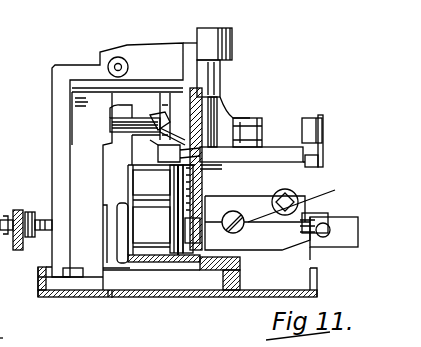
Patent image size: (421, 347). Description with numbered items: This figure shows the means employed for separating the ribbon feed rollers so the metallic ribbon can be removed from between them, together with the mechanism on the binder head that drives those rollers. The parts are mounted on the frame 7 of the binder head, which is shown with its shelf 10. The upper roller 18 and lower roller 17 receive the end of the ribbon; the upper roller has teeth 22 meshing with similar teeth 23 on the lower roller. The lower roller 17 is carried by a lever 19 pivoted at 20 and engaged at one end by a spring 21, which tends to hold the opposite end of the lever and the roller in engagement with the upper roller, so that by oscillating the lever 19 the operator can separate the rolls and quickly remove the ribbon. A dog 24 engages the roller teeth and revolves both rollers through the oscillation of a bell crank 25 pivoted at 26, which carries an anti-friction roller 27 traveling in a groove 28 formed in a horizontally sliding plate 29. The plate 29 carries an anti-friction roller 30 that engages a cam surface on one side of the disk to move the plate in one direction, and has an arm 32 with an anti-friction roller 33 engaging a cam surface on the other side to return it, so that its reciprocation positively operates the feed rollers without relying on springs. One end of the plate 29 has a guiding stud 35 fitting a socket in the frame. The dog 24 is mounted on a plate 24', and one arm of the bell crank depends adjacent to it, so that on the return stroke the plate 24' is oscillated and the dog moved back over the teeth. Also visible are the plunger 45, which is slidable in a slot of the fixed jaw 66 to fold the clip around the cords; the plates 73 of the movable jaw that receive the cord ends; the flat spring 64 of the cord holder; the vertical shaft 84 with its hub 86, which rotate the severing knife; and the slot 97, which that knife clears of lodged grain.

The frame 7 is at (52, 137).
The shelf 10 is at (312, 280).
The lower roller 17 is at (166, 223).
The upper roller 18 is at (161, 210).
The lever 19 is at (267, 260).
The pivot 20 is at (305, 210).
The spring 21 is at (322, 215).
The teeth 22 is at (263, 190).
The teeth 23 is at (175, 255).
The dog 24 is at (189, 198).
The plate 24' is at (250, 139).
The bell crank 25 is at (150, 150).
The pivot 26 is at (163, 127).
The anti-friction roller 27 is at (157, 125).
The groove 28 is at (195, 138).
The plate 29 is at (165, 100).
The anti-friction roller 30 is at (253, 130).
The arm 32 is at (304, 154).
The anti-friction roller 33 is at (326, 120).
The guiding stud 35 is at (122, 113).
The plunger 45 is at (354, 243).
The flat spring 64 is at (17, 250).
The fixed jaw 66 is at (122, 248).
The plates 73 is at (9, 338).
The vertical shaft 84 is at (233, 97).
The hub 86 is at (231, 32).
The slot 97 is at (113, 298).